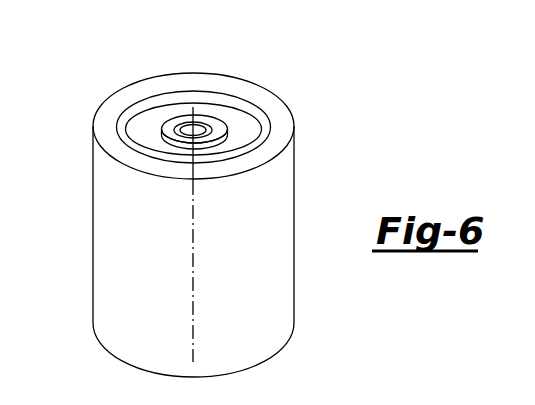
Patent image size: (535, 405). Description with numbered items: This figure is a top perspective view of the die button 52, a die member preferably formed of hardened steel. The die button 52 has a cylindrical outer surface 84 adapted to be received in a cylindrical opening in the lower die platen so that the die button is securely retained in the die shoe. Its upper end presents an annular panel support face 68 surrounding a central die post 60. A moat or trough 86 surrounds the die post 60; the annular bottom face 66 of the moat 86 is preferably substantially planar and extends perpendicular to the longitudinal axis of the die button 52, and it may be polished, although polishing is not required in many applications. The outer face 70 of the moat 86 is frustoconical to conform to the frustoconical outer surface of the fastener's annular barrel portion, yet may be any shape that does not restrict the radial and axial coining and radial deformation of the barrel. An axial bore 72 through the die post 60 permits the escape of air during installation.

The die button 52 is at (122, 233).
The central die post 60 is at (220, 115).
The annular bottom face 66 is at (160, 116).
The annular panel support face 68 is at (217, 80).
The outer face 70 is at (125, 118).
The axial bore 72 is at (188, 128).
The cylindrical outer surface 84 is at (108, 300).
The moat 86 is at (140, 135).